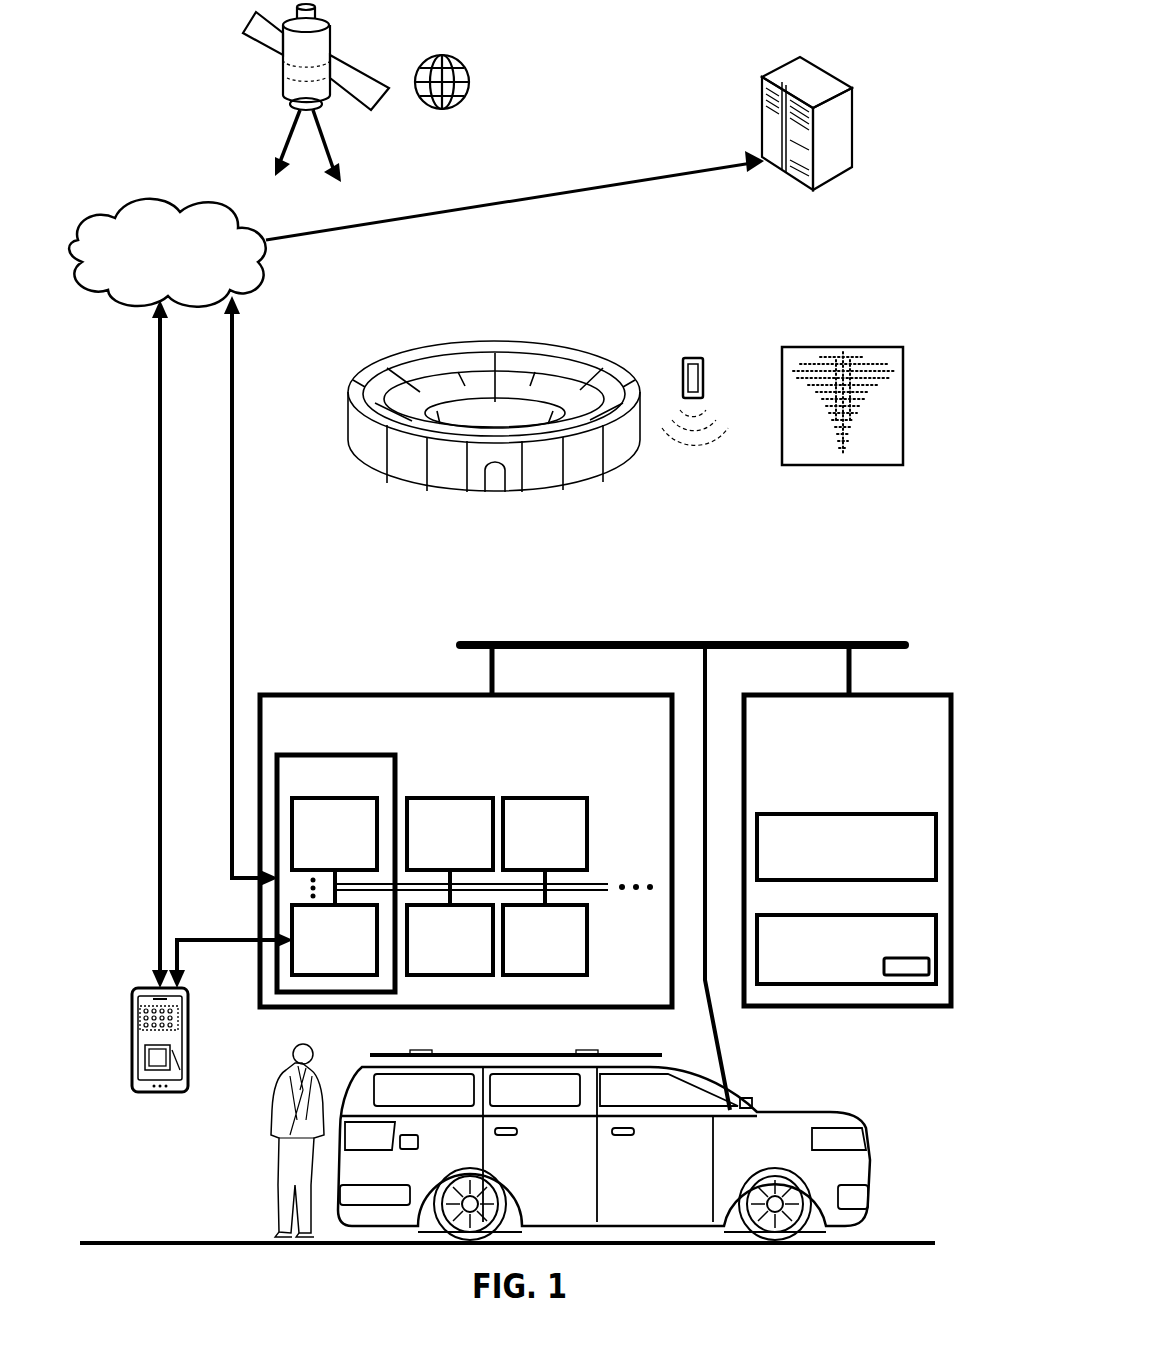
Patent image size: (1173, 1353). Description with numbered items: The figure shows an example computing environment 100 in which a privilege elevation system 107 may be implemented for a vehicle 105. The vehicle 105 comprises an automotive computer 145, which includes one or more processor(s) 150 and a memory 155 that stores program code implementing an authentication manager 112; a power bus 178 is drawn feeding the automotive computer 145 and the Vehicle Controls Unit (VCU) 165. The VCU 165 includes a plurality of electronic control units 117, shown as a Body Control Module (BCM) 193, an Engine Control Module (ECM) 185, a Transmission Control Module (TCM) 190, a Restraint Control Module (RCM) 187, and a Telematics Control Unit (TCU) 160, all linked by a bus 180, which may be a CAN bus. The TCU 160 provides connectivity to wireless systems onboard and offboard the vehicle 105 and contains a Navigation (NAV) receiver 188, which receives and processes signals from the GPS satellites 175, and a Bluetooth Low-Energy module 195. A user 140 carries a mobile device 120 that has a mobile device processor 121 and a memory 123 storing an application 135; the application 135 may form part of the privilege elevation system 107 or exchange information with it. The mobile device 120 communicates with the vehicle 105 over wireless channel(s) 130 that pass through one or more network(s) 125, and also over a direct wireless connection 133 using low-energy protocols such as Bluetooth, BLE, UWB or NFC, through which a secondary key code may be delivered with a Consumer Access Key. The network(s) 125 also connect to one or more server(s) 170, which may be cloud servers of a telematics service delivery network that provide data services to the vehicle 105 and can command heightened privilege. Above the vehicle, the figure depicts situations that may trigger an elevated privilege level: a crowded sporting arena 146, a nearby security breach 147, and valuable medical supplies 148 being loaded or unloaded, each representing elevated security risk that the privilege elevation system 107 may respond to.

The computing environment 100 is at (955, 88).
The vehicle 105 is at (763, 1112).
The privilege elevation system 107 is at (970, 590).
The authentication manager 112 is at (906, 976).
The electronic control units 117 is at (646, 822).
The mobile device 120 is at (136, 990).
The mobile device processor 121 is at (141, 1008).
The memory 123 is at (141, 1027).
The network 125 is at (236, 265).
The wireless channel 130 is at (160, 657).
The direct wireless connection 133 is at (200, 940).
The application 135 is at (185, 1088).
The user 140 is at (314, 1048).
The automotive computer 145 is at (829, 785).
The sporting arena 146 is at (483, 342).
The security breach 147 is at (695, 357).
The valuable medical supplies 148 is at (843, 347).
The processor 150 is at (831, 870).
The memory 155 is at (831, 973).
The telematics control unit 160 is at (379, 795).
The vehicle controls unit 165 is at (655, 733).
The server 170 is at (762, 78).
The Global Positioning System 175 is at (330, 28).
The power bus 178 is at (755, 640).
The bus 180 is at (588, 892).
The engine control module 185 is at (529, 864).
The restraint control module 187 is at (529, 970).
The navigation receiver 188 is at (318, 864).
The transmission control module 190 is at (434, 970).
The body control module 193 is at (434, 864).
The Bluetooth Low-Energy module 195 is at (318, 970).